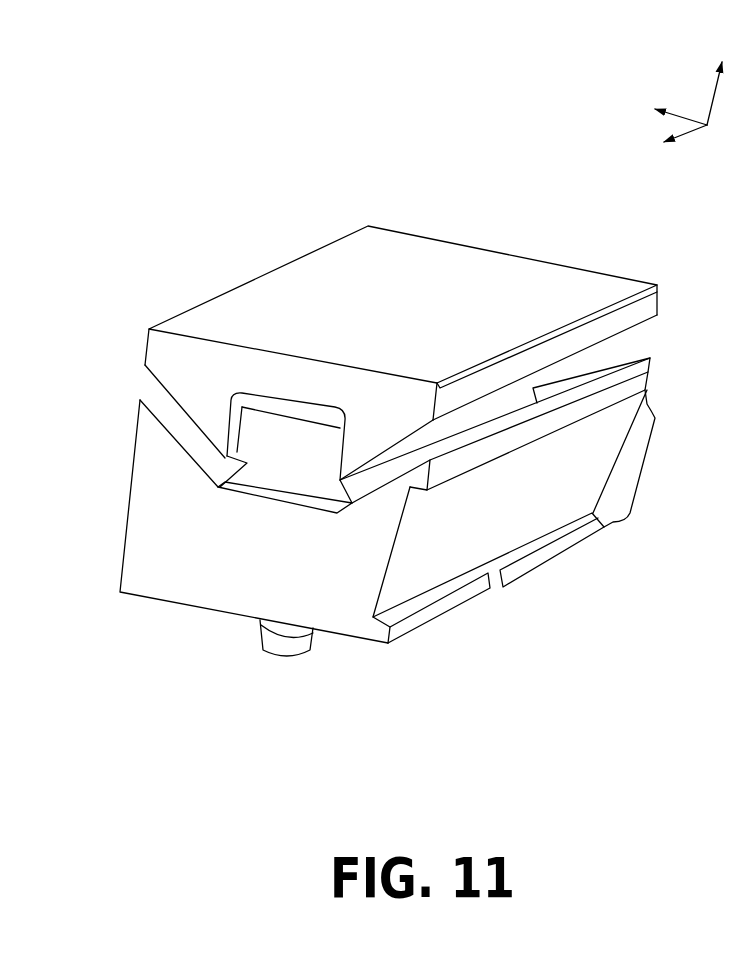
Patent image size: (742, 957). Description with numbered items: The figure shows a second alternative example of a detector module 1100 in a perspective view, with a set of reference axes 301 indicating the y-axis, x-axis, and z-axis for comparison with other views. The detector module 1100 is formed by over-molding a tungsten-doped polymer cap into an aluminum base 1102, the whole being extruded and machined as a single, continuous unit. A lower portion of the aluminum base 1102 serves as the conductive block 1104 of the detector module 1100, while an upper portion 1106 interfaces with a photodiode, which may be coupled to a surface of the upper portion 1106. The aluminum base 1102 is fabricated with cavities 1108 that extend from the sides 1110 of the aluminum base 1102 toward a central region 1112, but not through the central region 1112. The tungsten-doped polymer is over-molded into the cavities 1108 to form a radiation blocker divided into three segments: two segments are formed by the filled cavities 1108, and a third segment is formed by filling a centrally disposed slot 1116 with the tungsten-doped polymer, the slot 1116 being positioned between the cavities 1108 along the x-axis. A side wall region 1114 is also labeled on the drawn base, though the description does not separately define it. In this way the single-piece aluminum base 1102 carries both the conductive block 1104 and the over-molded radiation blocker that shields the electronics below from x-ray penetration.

The reference axes 301 is at (671, 88).
The detector module 1100 is at (318, 146).
The aluminum base 1102 is at (410, 351).
The conductive block 1104 is at (386, 507).
The upper portion 1106 is at (297, 287).
The cavities 1108 is at (141, 385).
The sides 1110 is at (135, 463).
The central region 1112 is at (310, 457).
The side wall post 1114 is at (644, 466).
The slot 1116 is at (287, 410).